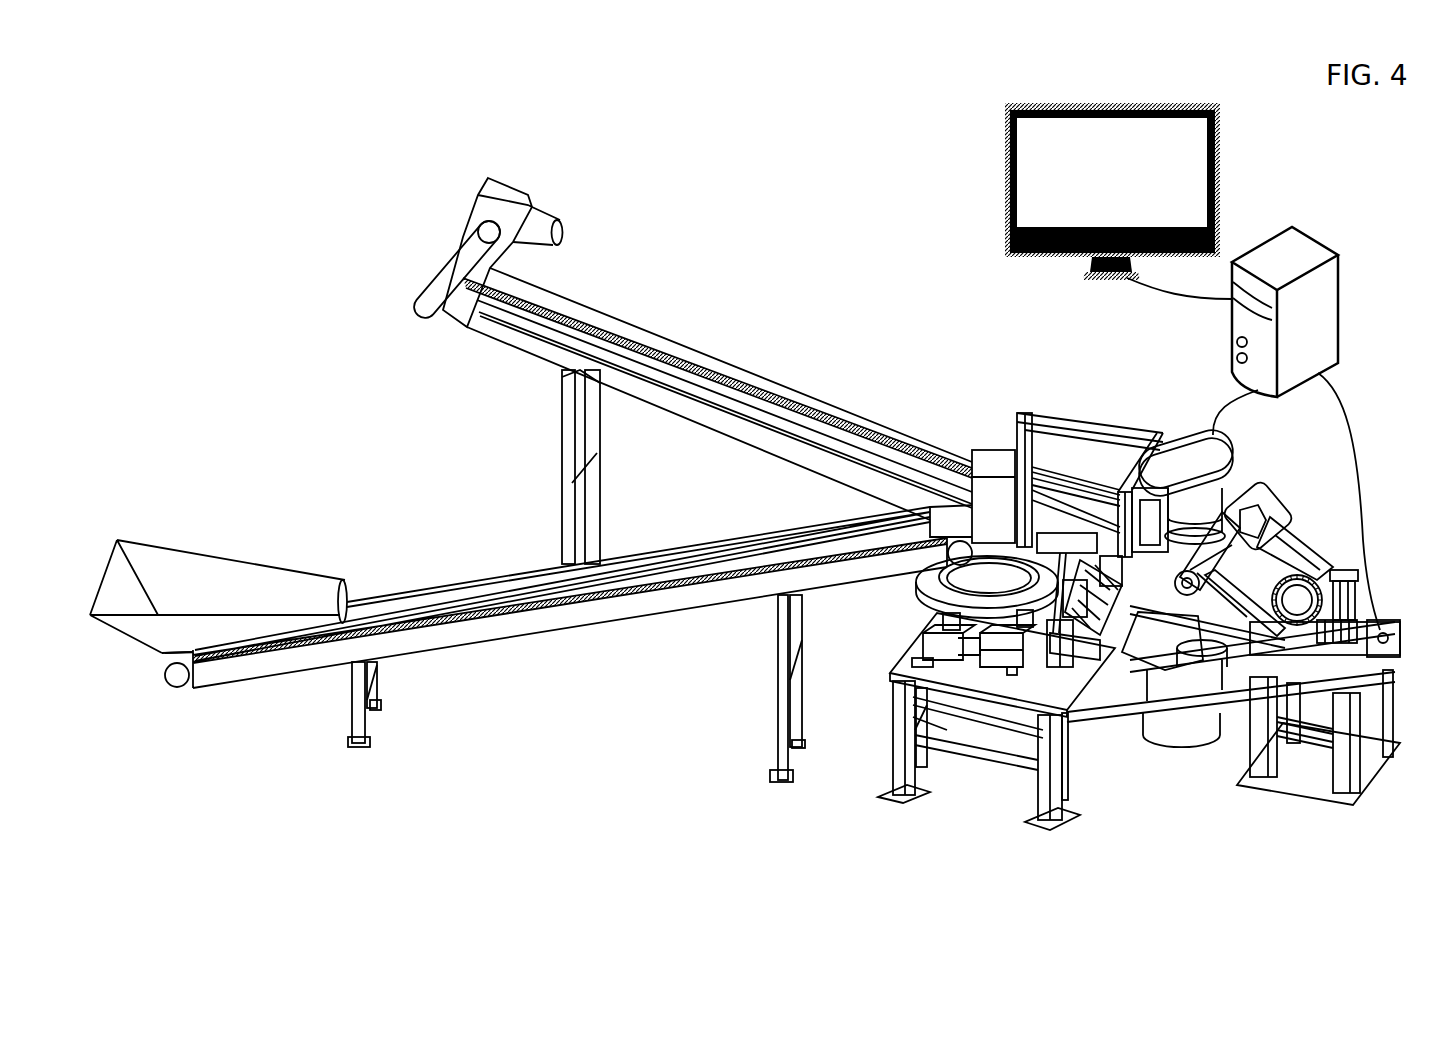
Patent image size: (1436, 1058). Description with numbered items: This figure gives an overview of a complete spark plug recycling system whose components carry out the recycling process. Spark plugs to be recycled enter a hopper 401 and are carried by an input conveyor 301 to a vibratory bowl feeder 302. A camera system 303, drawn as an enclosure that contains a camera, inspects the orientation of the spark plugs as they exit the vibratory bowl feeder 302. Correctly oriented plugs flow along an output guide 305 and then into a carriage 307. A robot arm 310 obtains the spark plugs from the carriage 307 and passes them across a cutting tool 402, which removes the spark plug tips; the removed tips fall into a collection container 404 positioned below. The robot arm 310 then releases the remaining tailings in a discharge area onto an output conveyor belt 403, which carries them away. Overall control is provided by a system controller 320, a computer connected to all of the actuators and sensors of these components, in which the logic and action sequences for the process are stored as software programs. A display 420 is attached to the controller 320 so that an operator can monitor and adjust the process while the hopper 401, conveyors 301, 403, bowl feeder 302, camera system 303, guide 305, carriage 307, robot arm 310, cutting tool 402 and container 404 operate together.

The input conveyor 301 is at (550, 622).
The vibratory bowl feeder 302 is at (920, 582).
The camera system 303 is at (992, 450).
The output guide 305 is at (1063, 543).
The carriage 307 is at (1058, 618).
The robot arm 310 is at (1265, 487).
The system controller 320 is at (1298, 255).
The hopper 401 is at (205, 560).
The cutting tool 402 is at (1195, 442).
The output conveyor belt 403 is at (727, 388).
The collection container 404 is at (1183, 735).
The display 420 is at (1133, 104).